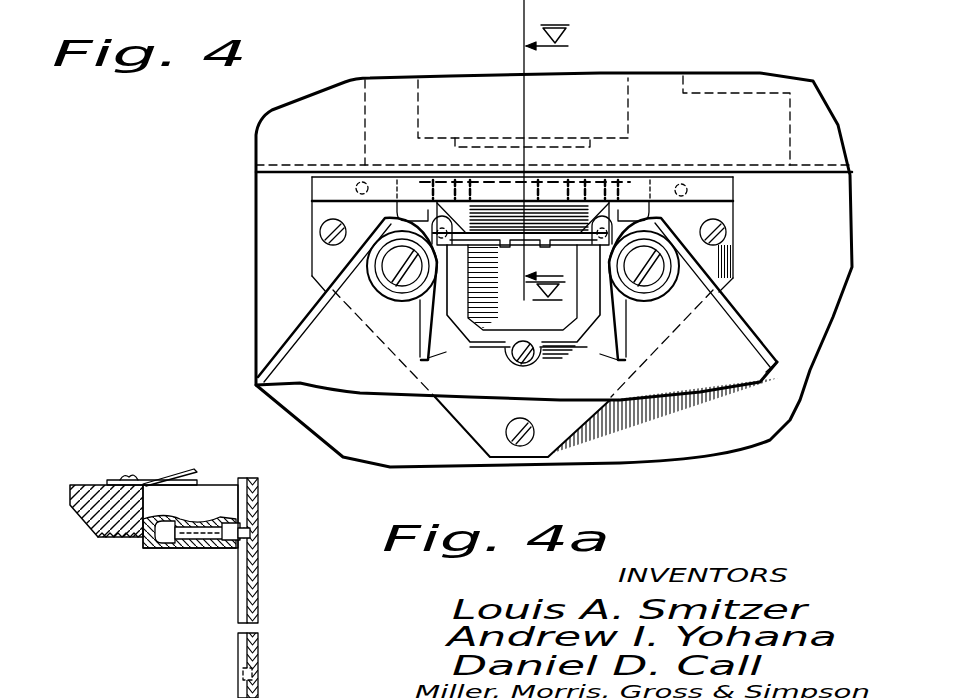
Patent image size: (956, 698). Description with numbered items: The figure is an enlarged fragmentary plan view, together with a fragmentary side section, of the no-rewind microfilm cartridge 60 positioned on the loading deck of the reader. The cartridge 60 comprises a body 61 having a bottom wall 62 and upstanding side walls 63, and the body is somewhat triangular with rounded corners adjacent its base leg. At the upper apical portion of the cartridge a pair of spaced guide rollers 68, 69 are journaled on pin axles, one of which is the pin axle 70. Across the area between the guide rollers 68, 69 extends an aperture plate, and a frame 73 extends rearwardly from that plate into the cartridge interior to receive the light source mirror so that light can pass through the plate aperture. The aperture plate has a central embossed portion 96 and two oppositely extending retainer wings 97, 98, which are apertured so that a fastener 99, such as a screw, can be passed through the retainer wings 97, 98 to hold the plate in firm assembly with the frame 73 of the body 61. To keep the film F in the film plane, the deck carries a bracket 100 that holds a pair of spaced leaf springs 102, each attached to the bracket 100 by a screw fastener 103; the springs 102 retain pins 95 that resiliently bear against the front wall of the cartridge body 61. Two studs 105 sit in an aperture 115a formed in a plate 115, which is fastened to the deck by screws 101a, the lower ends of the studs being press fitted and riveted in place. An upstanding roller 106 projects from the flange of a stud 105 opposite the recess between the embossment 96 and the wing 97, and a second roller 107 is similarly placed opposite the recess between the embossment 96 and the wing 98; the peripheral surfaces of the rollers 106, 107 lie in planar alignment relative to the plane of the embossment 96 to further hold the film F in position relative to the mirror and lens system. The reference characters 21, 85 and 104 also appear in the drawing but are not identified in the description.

In FIG. 4, the bracket leg 21 is at (640, 290).
In FIG. 4, the cartridge 60 is at (294, 315).
In FIG. 4, the body 61 is at (411, 200).
In FIG. 4, the bottom wall 62 is at (357, 384).
In FIG. 4, the side walls 63 is at (256, 350).
In FIG. 4, the guide roller 68 is at (377, 254).
In FIG. 4, the guide roller 69 is at (672, 268).
In FIG. 4, the pin axle 70 is at (413, 283).
In FIG. 4, the frame 73 is at (462, 296).
In FIG. 4, the section line 85 is at (520, 150).
In FIG. 4, the pins 95 is at (383, 214).
In FIG. 4a, the pins 95 is at (200, 484).
In FIG. 4, the central embossed portion 96 is at (538, 232).
In FIG. 4, the retainer wing 97 is at (505, 232).
In FIG. 4, the retainer wing 98 is at (566, 232).
In FIG. 4, the fastener 99 is at (590, 243).
In FIG. 4a, the bracket 100 is at (70, 503).
In FIG. 4, the screws 101a is at (323, 226).
In FIG. 4a, the screws 101a is at (242, 673).
In FIG. 4a, the leaf springs 102 is at (168, 470).
In FIG. 4a, the screw fastener 103 is at (124, 479).
In FIG. 4, the housing outline 104 is at (445, 212).
In FIG. 4a, the stud 105 is at (232, 547).
In FIG. 4, the upstanding roller 106 is at (453, 225).
In FIG. 4a, the upstanding roller 106 is at (152, 548).
In FIG. 4, the second roller 107 is at (584, 232).
In FIG. 4a, the plate 115 is at (238, 602).
In FIG. 4a, the aperture 115a is at (247, 517).